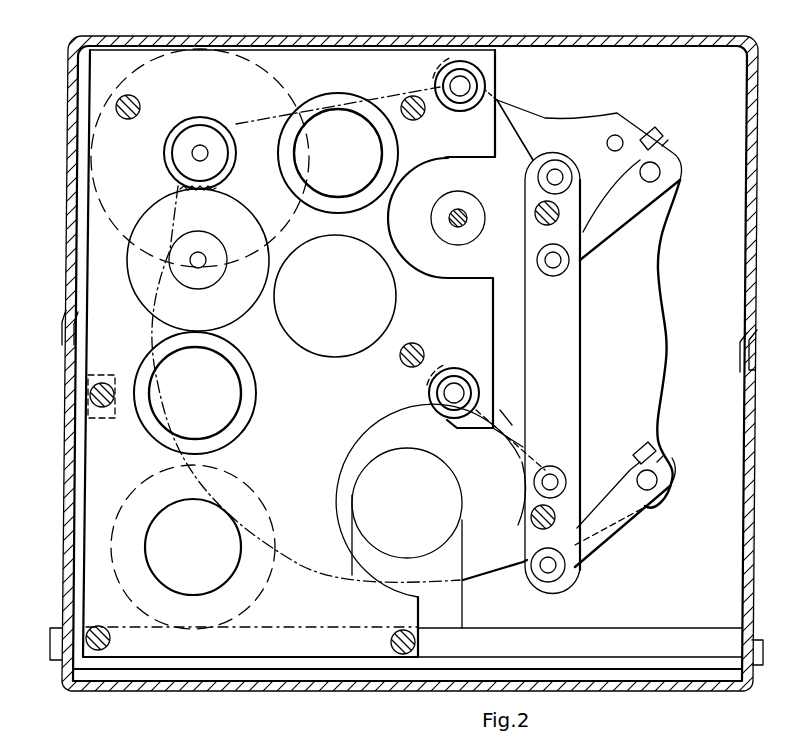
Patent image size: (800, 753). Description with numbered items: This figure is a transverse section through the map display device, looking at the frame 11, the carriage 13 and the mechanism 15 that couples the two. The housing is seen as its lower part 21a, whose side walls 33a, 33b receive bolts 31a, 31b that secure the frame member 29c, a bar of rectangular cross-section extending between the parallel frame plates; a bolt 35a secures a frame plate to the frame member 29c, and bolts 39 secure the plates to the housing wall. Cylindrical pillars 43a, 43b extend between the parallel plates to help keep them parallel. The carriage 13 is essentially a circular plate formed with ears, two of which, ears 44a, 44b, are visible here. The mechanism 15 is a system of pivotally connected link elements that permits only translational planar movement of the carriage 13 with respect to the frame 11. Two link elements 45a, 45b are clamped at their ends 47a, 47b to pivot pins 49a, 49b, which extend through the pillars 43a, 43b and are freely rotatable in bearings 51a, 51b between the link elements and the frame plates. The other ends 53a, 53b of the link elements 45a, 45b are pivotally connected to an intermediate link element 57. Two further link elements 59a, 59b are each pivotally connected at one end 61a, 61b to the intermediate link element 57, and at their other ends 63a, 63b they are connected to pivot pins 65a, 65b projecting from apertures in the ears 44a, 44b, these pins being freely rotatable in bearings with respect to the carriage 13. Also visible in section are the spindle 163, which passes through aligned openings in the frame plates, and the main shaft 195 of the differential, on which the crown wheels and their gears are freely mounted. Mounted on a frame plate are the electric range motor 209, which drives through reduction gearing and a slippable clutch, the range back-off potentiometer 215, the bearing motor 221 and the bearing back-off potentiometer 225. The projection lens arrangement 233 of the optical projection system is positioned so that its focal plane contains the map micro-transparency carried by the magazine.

The frame 11 is at (412, 353).
The carriage 13 is at (544, 117).
The mechanism 15 is at (584, 363).
The lower part of the housing 21a is at (752, 78).
The frame member 29c is at (224, 672).
The bolt 31a is at (50, 637).
The bolt 31b is at (760, 651).
The side wall 33a is at (64, 545).
The side wall 33b is at (752, 580).
The bolt 35a is at (98, 651).
The bolt 39 is at (108, 386).
The cylindrical pillar 43a is at (476, 74).
The cylindrical pillar 43b is at (470, 376).
The ear 44a is at (643, 132).
The ear 44b is at (658, 510).
The link element 45a is at (497, 100).
The link element 45b is at (508, 420).
The end of link element 47a is at (456, 60).
The end of link element 47b is at (456, 372).
The pivot pin 49a is at (466, 84).
The pivot pin 49b is at (458, 393).
The bearing 51a is at (458, 110).
The bearing 51b is at (446, 421).
The other end of link element 53a is at (560, 170).
The other end of link element 53b is at (551, 468).
The intermediate link element 57 is at (552, 373).
The link element 59a is at (640, 228).
The link element 59b is at (612, 536).
The end of link element 61a is at (564, 237).
The end of link element 61b is at (566, 578).
The other end of link element 63a is at (662, 176).
The other end of link element 63b is at (659, 474).
The pivot pin 65a is at (648, 180).
The pivot pin 65b is at (660, 487).
The spindle 163 is at (203, 150).
The main shaft of the differential 195 is at (203, 265).
The electric range motor 209 is at (254, 428).
The range back-off potentiometer 215 is at (230, 580).
The bearing motor 221 is at (342, 100).
The bearing back-off potentiometer 225 is at (332, 350).
The projection lens arrangement 233 is at (360, 497).